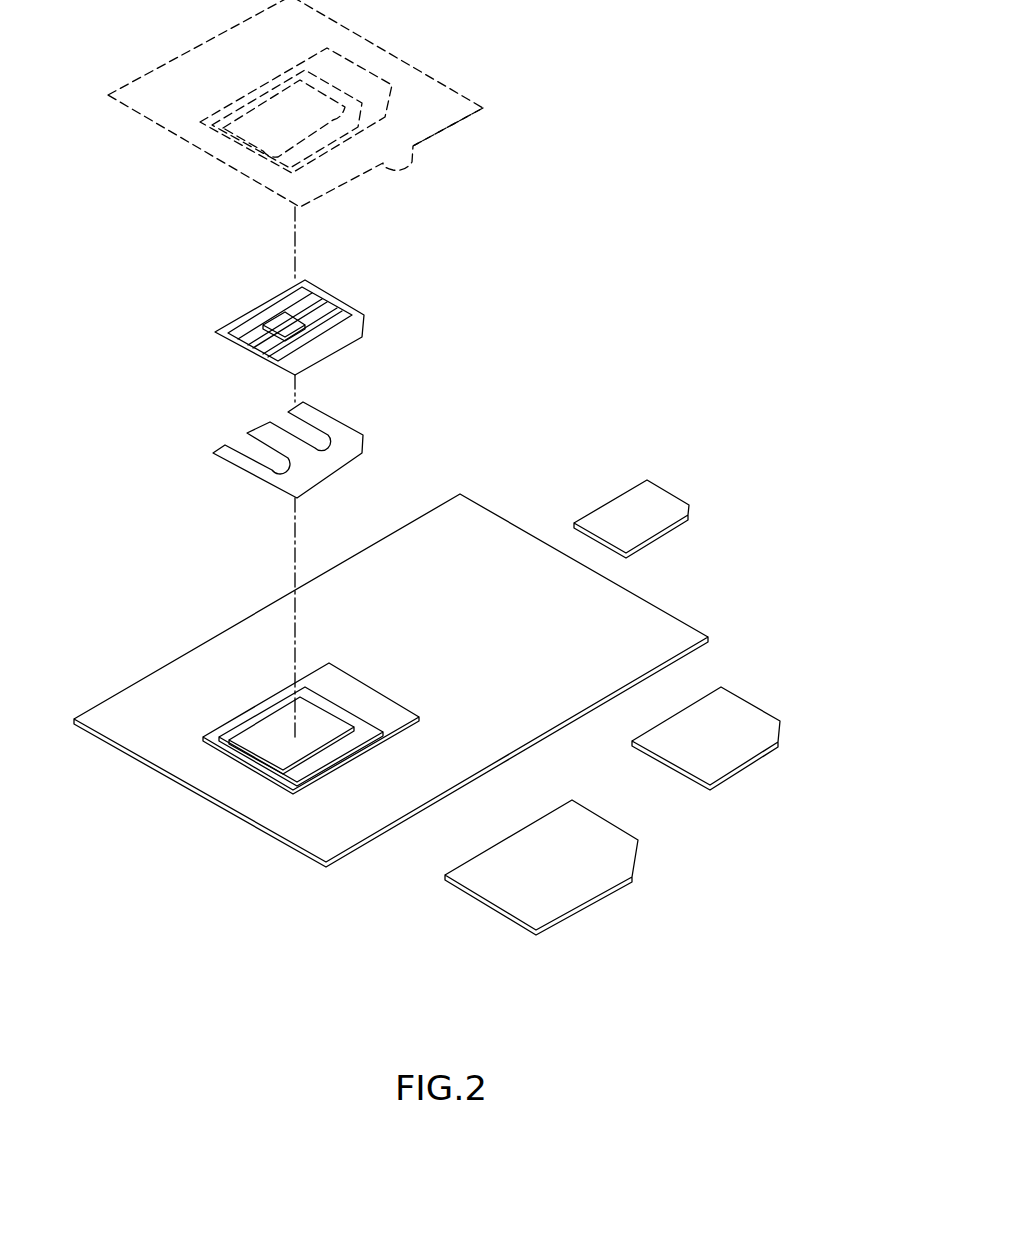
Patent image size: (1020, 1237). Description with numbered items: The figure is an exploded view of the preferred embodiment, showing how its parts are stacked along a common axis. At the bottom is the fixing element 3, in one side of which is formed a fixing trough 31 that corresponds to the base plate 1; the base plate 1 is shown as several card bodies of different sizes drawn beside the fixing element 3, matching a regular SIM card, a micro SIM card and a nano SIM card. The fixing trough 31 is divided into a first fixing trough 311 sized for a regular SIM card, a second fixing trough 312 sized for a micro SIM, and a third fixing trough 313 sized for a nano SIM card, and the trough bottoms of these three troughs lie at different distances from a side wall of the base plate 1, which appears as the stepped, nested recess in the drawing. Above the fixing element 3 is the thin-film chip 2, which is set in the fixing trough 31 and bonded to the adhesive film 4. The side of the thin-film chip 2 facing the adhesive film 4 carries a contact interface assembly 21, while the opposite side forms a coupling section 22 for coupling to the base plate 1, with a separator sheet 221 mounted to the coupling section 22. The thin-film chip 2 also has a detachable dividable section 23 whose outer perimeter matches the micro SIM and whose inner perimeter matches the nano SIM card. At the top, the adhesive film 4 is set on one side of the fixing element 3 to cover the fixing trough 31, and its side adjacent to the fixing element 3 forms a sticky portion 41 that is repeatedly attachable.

The base plate 1 is at (723, 753).
The thin-film chip 2 is at (398, 317).
The contact interface assembly 21 is at (275, 325).
The coupling section 22 is at (348, 343).
The separator sheet 221 is at (353, 450).
The dividable section 23 is at (352, 325).
The fixing element 3 is at (672, 605).
The fixing trough 31 is at (332, 855).
The first fixing trough 311 is at (383, 711).
The second fixing trough 312 is at (337, 750).
The third fixing trough 313 is at (287, 825).
The adhesive film 4 is at (468, 82).
The sticky portion 41 is at (453, 127).